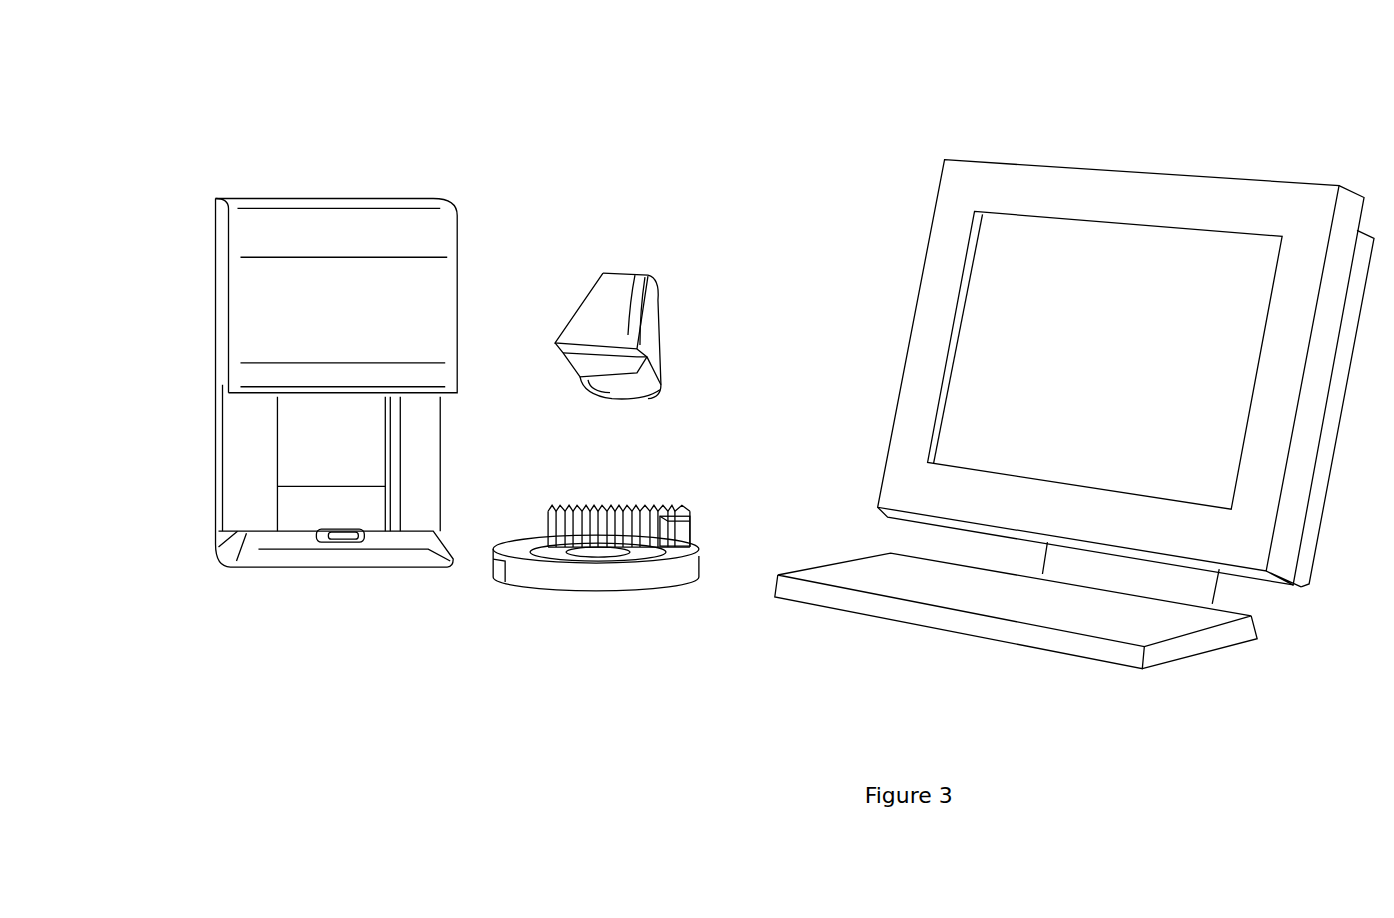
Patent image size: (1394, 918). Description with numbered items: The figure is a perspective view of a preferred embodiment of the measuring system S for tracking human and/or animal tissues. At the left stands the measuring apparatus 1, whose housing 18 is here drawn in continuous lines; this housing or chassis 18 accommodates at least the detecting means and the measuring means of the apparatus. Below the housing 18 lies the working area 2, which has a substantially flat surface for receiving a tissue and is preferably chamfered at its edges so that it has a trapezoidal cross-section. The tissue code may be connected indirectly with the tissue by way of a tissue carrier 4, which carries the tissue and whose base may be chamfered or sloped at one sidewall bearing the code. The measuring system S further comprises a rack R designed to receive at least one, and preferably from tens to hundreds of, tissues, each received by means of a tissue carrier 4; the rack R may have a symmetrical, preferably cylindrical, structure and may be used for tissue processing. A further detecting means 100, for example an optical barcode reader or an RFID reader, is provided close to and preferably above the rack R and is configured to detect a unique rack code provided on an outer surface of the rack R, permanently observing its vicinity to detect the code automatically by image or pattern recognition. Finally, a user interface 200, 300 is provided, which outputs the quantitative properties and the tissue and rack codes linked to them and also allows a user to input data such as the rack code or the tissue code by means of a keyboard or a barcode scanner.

The measuring apparatus 1 is at (320, 173).
The housing 18 is at (250, 305).
The working area 2 is at (250, 573).
The tissue carrier 4 is at (357, 545).
The further detecting means 100 is at (607, 297).
The rack R is at (580, 578).
The measuring system S is at (985, 83).
The user interface 200 is at (1103, 265).
The user interface 300 is at (982, 593).